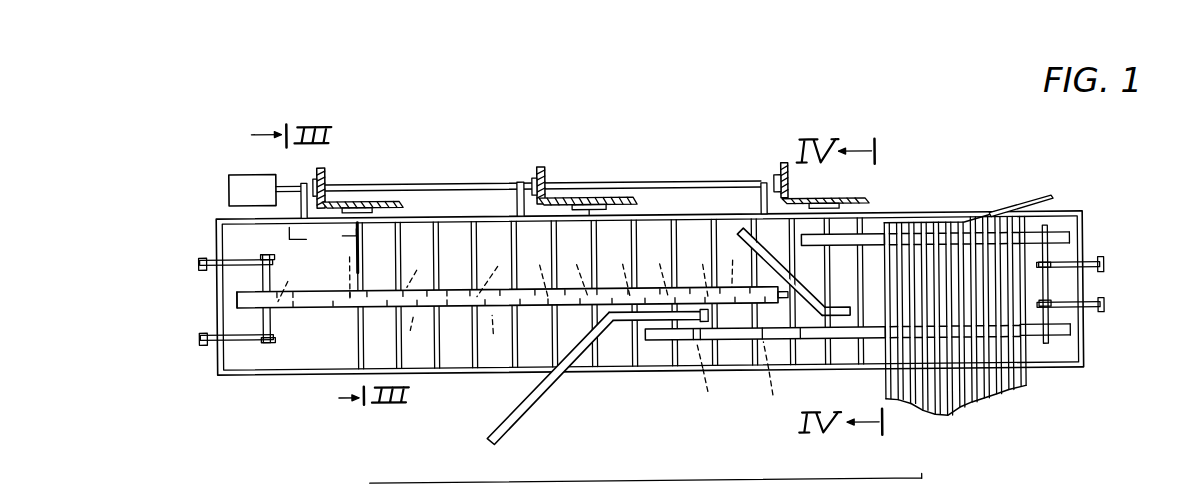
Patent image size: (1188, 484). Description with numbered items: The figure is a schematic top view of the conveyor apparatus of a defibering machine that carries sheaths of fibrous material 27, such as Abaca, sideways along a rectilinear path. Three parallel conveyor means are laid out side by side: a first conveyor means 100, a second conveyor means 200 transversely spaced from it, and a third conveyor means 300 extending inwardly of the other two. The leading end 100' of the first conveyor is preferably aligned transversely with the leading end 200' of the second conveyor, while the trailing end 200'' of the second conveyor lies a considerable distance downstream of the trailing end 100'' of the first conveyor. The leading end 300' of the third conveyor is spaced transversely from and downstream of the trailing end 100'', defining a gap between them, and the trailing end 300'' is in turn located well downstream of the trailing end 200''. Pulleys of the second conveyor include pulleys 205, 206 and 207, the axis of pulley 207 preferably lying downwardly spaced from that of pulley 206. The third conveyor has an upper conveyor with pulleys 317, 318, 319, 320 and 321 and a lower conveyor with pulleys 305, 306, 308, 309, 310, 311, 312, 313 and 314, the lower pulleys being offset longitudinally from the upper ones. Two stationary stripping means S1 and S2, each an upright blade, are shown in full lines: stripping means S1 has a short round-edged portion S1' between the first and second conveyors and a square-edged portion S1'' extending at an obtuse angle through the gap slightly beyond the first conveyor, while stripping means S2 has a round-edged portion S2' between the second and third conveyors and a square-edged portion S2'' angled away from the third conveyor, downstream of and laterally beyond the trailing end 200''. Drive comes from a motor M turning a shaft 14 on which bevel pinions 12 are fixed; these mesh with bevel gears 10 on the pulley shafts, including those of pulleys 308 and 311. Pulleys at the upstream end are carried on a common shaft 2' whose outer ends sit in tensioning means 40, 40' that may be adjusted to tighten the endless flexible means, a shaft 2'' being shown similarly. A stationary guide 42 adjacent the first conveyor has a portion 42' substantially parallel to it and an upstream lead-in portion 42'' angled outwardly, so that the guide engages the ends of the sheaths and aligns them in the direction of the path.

The motor M is at (247, 172).
The bevel pinion 12 is at (324, 167).
The shaft 14 is at (452, 183).
The bevel gear 10 is at (404, 203).
The tensioning means 40 is at (646, 256).
The adjusting screw 40' is at (651, 332).
The left bracket 2'' is at (287, 297).
The common shaft 2' is at (1069, 284).
The third conveyor means 300 is at (496, 303).
The leading end of third conveyor means 300' is at (803, 275).
The trailing end of third conveyor means 300'' is at (201, 303).
The pulley 311 is at (342, 275).
The pulley 312 is at (314, 283).
The pulley 313 is at (280, 297).
The pulley 321 is at (418, 269).
The pulley 310 is at (422, 335).
The pulley 320 is at (494, 271).
The pulley 319 is at (536, 272).
The pulley 308 is at (574, 272).
The pulley 318 is at (614, 271).
The pulley 306 is at (654, 271).
The pulley 317 is at (693, 271).
The pulley 305 is at (732, 265).
The pulley 309 is at (498, 334).
The second stripping means S2 is at (597, 376).
The first portion of second stripping means S2' is at (653, 354).
The second portion of second stripping means S2'' is at (550, 378).
The trailing end of second conveyor means 200'' is at (763, 362).
The pulley 206 is at (721, 388).
The pulley 207 is at (699, 354).
The pulley 205 is at (797, 388).
The pulley 314 is at (765, 355).
The first stripping means S1 is at (787, 291).
The first portion of first stripping means S1' is at (838, 351).
The second portion of first stripping means S1'' is at (773, 251).
The trailing end of first conveyor means 100'' is at (840, 208).
The guide 42 is at (980, 288).
The portion of guide 42' is at (938, 197).
The lead-in portion of guide 42'' is at (1032, 184).
The sheaths of fibrous material 27 is at (997, 401).
The first conveyor means 100 is at (1085, 209).
The leading end of first conveyor means 100' is at (1085, 232).
The second conveyor means 200 is at (1084, 360).
The leading end of second conveyor means 200' is at (1084, 329).